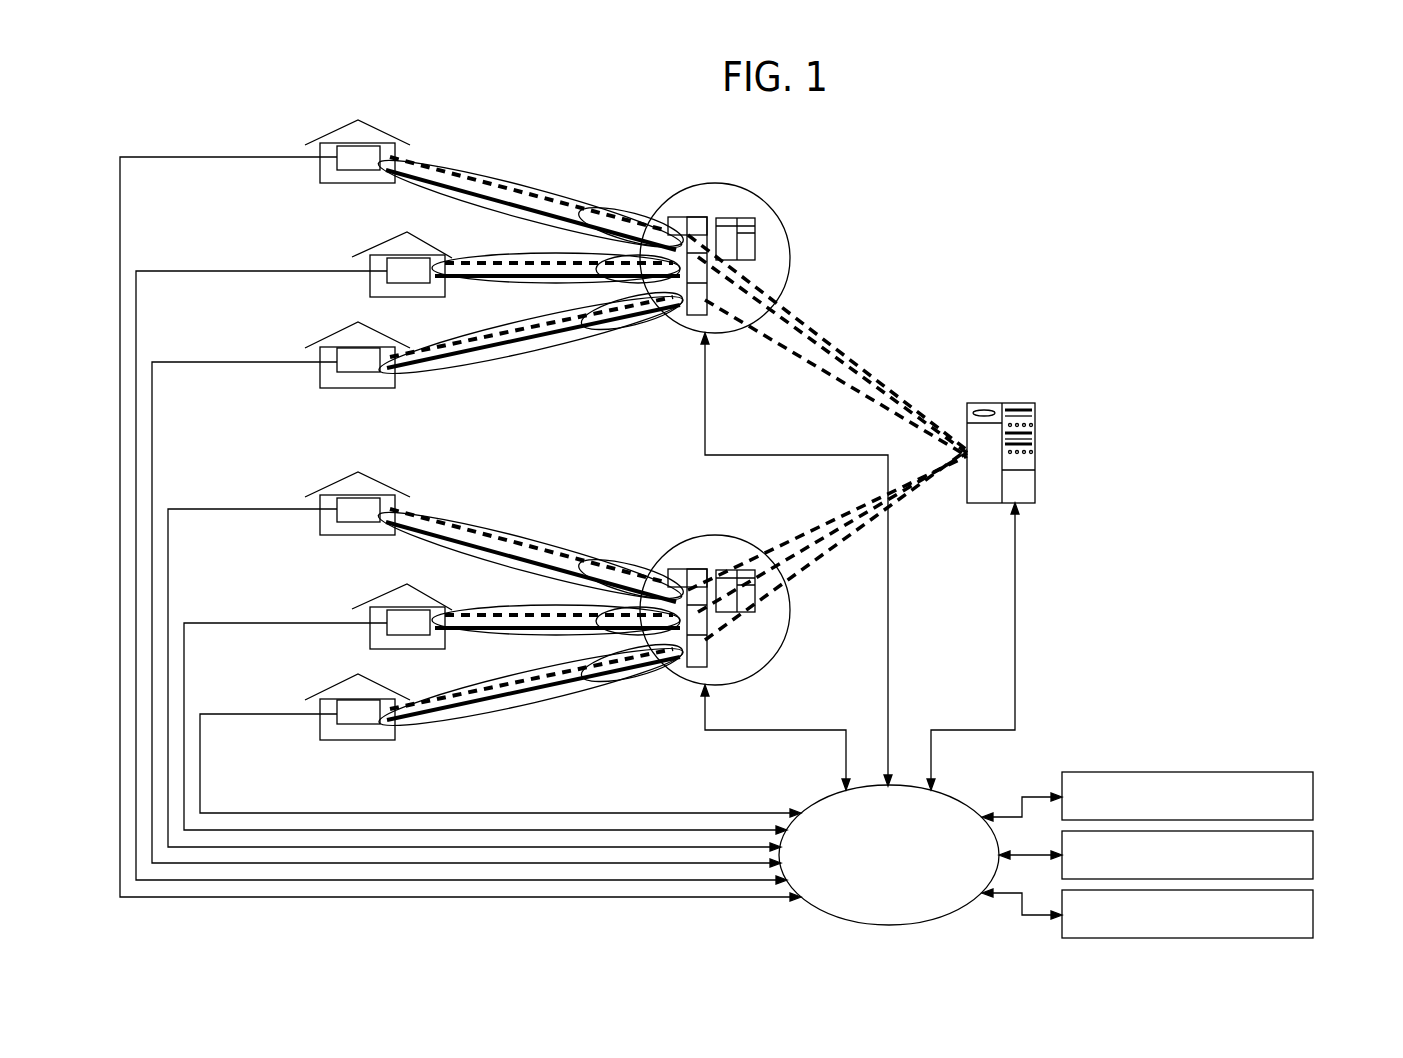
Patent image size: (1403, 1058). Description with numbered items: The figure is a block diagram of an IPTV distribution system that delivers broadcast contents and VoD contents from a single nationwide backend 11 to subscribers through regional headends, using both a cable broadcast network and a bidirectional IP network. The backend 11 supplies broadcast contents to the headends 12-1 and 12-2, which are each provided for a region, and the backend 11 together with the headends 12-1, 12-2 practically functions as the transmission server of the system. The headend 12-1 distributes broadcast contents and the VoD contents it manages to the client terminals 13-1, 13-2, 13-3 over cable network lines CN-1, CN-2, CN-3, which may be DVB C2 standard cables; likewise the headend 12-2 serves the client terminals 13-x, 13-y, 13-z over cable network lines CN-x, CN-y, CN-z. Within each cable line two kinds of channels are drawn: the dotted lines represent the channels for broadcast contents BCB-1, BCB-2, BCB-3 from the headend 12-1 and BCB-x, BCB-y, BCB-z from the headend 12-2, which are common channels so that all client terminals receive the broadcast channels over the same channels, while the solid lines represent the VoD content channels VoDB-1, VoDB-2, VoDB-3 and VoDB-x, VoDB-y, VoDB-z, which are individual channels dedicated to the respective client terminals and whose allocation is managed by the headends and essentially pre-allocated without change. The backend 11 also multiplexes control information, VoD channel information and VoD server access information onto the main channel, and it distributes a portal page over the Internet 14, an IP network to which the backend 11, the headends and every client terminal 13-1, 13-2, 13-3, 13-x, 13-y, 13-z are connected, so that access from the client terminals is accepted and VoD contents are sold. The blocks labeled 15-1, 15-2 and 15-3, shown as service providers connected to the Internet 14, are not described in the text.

The backend 11 is at (1035, 462).
The headend 12-1 is at (788, 243).
The headend 12-2 is at (737, 617).
The client terminal 13-1 is at (337, 158).
The client terminal 13-2 is at (405, 268).
The client terminal 13-3 is at (337, 363).
The client terminal 13-x is at (330, 509).
The client terminal 13-y is at (368, 616).
The client terminal 13-z is at (330, 713).
The Internet 14 is at (810, 806).
The service provider 15-1 is at (1314, 796).
The service provider 15-2 is at (1314, 855).
The service provider 15-3 is at (1314, 915).
The cable network line CN-1 is at (450, 161).
The cable network line CN-2 is at (483, 287).
The cable network line CN-3 is at (420, 375).
The cable network line CN-x is at (530, 539).
The cable network line CN-y is at (481, 643).
The cable network line CN-z is at (530, 718).
The channel for broadcast contents BCB-1 is at (593, 176).
The channel for broadcast contents BCB-2 is at (521, 253).
The channel for broadcast contents BCB-3 is at (481, 362).
The channel for broadcast contents BCB-x is at (529, 543).
The channel for broadcast contents BCB-y is at (559, 541).
The channel for broadcast contents BCB-z is at (531, 704).
The VoD content channel VoDB-1 is at (447, 190).
The VoD content channel VoDB-2 is at (527, 283).
The VoD content channel VoDB-3 is at (580, 332).
The VoD content channel VoDB-x is at (503, 564).
The VoD content channel VoDB-y is at (557, 703).
The VoD content channel VoDB-z is at (536, 692).